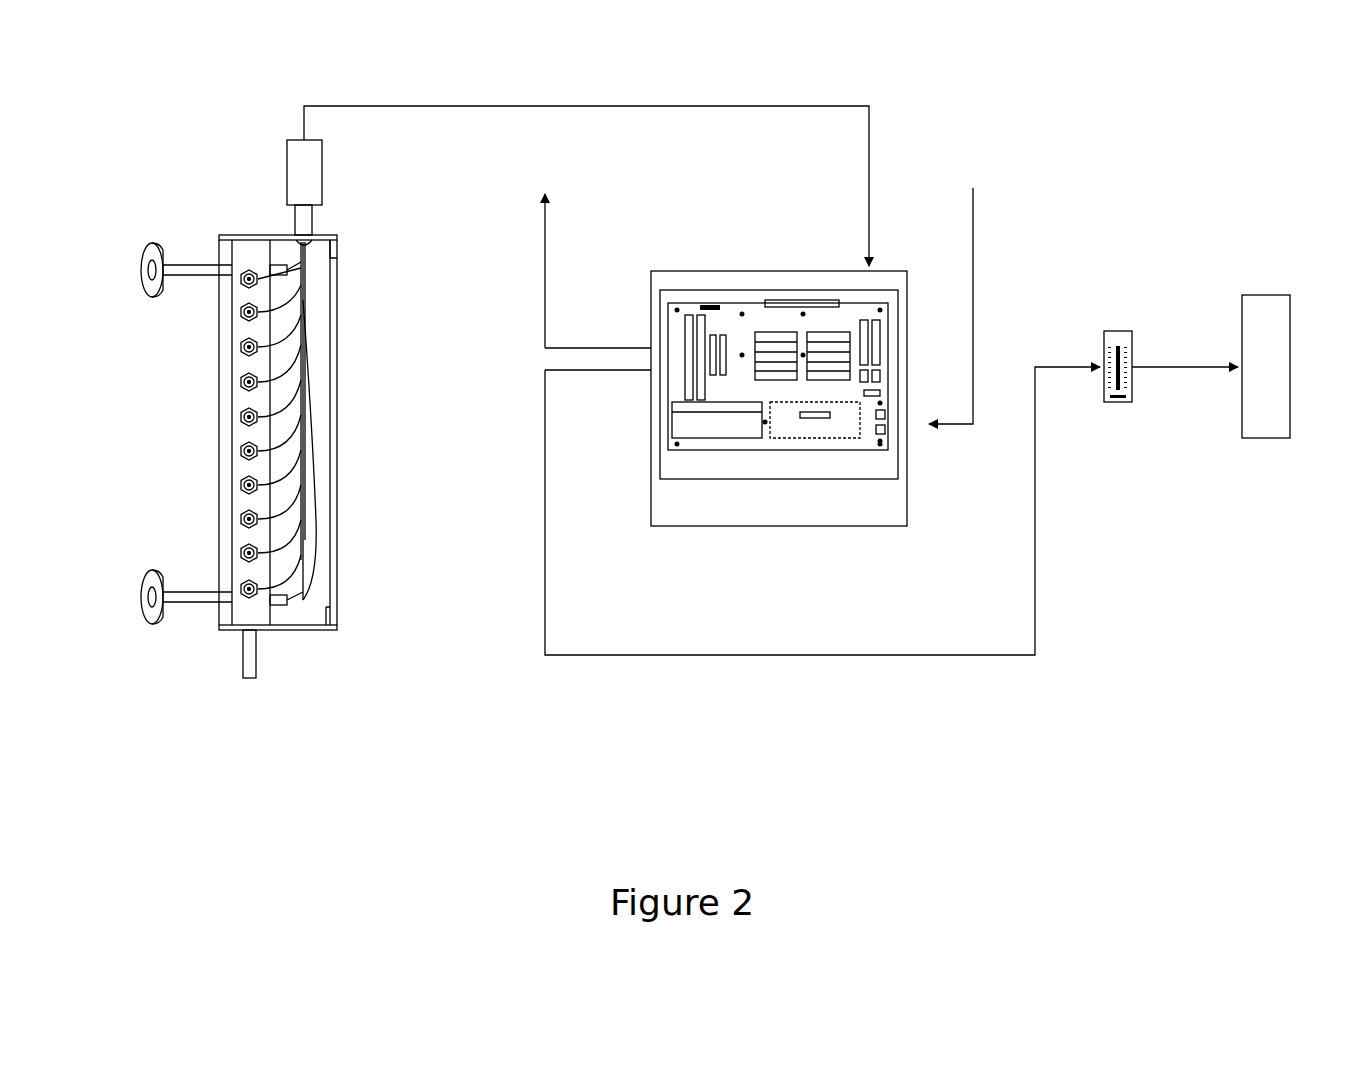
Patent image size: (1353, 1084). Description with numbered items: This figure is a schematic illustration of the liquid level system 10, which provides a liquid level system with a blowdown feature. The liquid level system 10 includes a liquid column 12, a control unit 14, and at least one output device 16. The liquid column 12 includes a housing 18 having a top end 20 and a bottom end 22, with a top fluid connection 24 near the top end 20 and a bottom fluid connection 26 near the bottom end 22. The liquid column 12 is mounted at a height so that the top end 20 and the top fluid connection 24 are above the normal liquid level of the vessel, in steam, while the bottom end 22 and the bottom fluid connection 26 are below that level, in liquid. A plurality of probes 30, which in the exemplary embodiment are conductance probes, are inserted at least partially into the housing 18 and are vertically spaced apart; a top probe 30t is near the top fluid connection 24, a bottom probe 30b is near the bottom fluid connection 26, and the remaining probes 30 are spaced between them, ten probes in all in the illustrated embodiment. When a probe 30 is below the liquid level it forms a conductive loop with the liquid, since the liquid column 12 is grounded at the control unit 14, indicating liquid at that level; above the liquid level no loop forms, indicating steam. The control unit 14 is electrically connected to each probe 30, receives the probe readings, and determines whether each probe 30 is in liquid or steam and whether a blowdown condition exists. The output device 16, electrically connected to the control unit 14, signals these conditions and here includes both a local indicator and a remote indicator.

The liquid level system 10 is at (993, 709).
The liquid column 12 is at (258, 210).
The control unit 14 is at (760, 258).
The output device 16 is at (1133, 323).
The housing 18 is at (219, 421).
The top end 20 is at (337, 236).
The bottom end 22 is at (337, 627).
The top fluid connection 24 is at (195, 263).
The bottom fluid connection 26 is at (193, 606).
The probes 30 is at (266, 416).
The top probe 30t is at (258, 279).
The bottom probe 30b is at (258, 589).